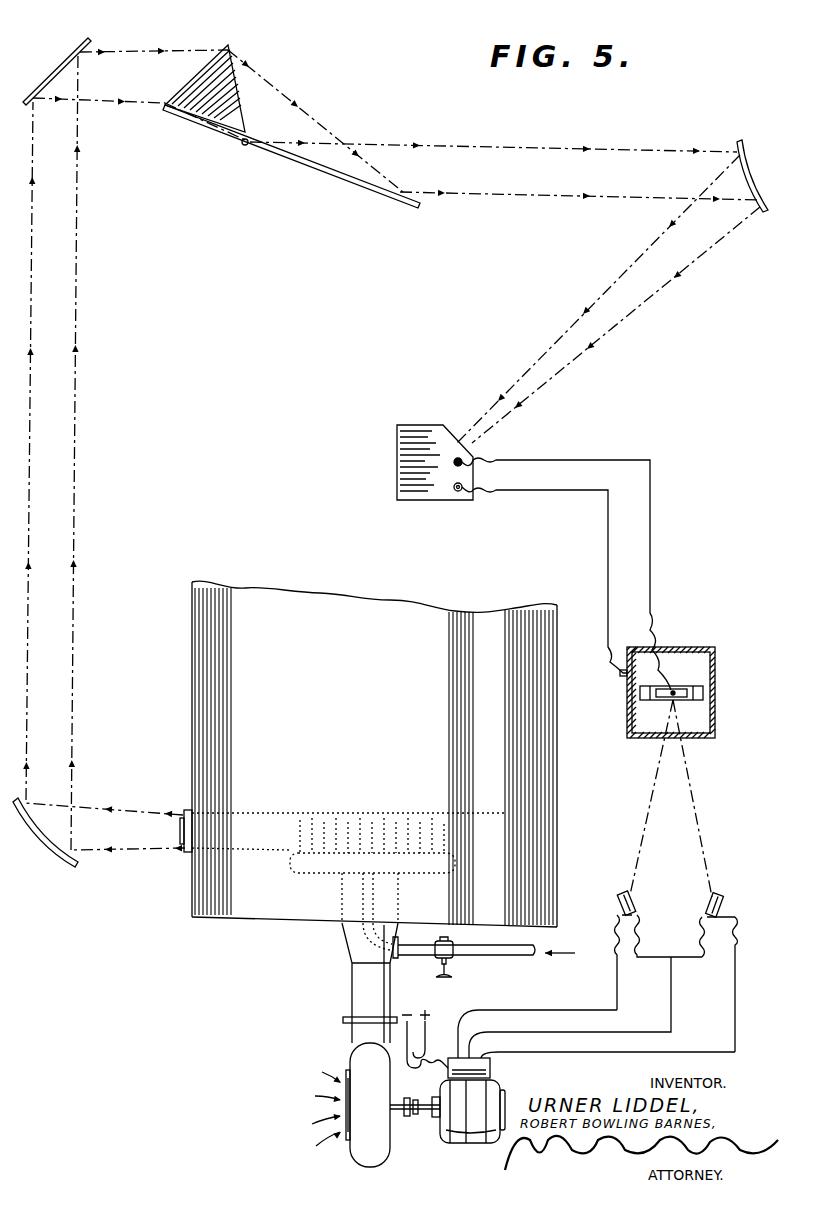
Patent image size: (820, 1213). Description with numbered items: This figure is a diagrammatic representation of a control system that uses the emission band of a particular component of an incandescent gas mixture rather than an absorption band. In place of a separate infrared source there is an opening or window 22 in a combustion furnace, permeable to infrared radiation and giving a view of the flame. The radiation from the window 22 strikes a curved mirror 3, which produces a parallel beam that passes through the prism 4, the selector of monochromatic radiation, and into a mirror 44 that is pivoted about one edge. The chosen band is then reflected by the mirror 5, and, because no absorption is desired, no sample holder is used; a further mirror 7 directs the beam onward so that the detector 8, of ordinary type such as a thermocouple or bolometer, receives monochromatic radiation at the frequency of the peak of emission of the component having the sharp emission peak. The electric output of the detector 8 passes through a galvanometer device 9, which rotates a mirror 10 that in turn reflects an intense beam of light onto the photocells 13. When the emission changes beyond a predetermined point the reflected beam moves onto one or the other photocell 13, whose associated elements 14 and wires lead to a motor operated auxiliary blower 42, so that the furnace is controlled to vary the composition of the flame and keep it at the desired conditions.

The curved mirror 3 is at (55, 848).
The prism 4 is at (212, 117).
The mirror 5 is at (50, 70).
The concave mirror 7 is at (745, 140).
The infrared detector 8 is at (422, 425).
The galvanometer device 9 is at (715, 673).
The mirror 10 is at (680, 690).
The photocells 13 is at (622, 899).
The rectifier elements 14 is at (676, 983).
The window 22 is at (185, 852).
The motor operated auxiliary blower 42 is at (350, 1054).
The mirror 44 is at (330, 168).